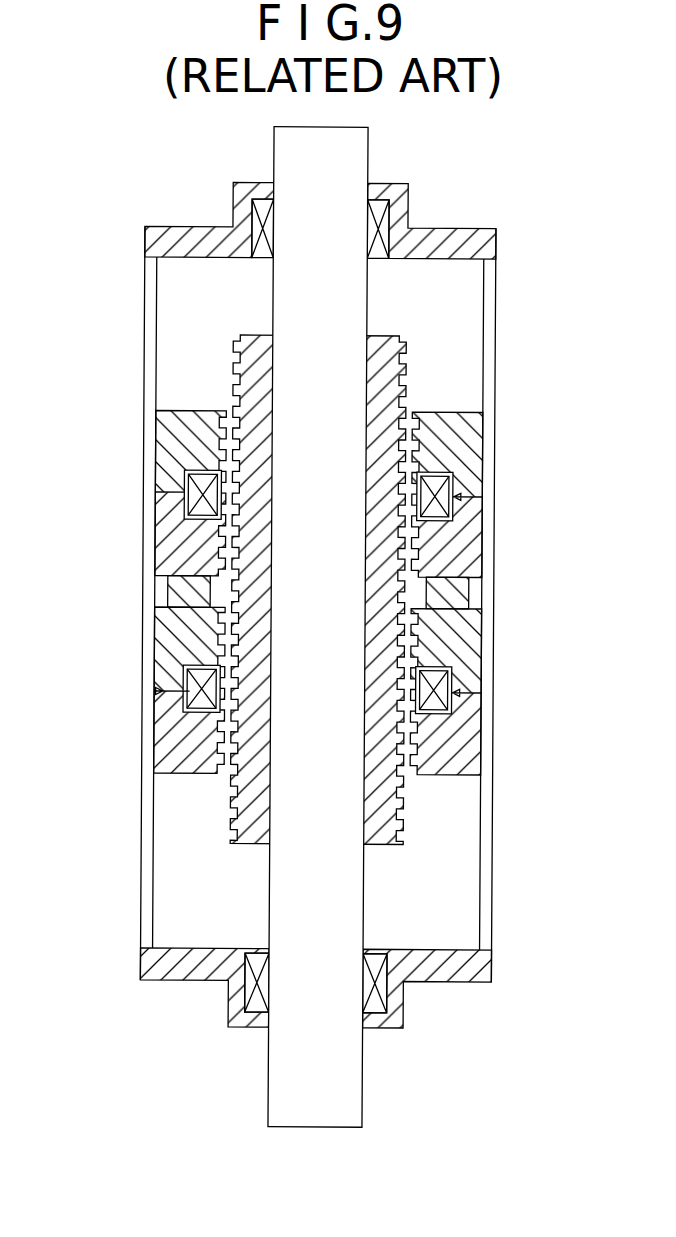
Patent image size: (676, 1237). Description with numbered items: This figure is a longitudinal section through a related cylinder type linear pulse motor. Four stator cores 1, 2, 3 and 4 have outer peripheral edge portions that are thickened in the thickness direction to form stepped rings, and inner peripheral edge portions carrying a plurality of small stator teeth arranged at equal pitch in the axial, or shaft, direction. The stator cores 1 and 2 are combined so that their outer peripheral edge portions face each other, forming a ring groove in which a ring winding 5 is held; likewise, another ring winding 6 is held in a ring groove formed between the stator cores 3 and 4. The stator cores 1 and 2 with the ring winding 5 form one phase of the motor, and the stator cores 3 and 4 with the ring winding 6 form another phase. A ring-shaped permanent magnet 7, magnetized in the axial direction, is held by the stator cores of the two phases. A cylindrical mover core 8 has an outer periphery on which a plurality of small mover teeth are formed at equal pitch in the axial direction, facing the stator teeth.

The stator core 1 is at (459, 447).
The stator core 2 is at (463, 550).
The stator core 3 is at (458, 645).
The stator core 4 is at (460, 745).
The ring winding 5 is at (189, 491).
The ring winding 6 is at (197, 693).
The permanent magnet 7 is at (167, 593).
The mover core 8 is at (386, 787).